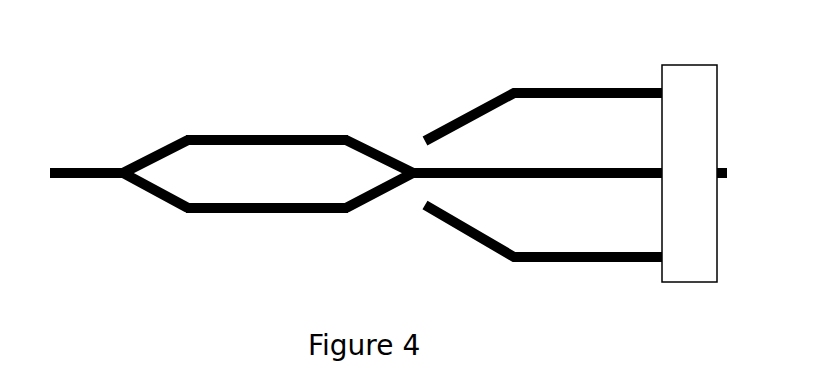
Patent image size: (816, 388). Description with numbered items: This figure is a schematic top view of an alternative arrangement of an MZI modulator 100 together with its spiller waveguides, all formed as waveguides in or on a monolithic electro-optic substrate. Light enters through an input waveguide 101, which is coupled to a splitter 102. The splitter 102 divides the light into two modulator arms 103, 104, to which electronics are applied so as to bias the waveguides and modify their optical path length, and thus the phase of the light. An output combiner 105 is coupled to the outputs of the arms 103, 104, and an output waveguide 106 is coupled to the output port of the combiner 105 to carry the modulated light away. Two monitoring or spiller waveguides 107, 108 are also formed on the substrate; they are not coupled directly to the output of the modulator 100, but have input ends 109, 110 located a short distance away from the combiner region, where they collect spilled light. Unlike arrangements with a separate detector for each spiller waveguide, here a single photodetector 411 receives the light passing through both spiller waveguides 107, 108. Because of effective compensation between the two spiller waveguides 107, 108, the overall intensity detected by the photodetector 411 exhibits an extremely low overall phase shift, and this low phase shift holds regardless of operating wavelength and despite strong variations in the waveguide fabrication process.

The MZI modulator 100 is at (219, 97).
The input waveguide 101 is at (88, 178).
The splitter 102 is at (123, 180).
The modulator arm 103 is at (308, 135).
The modulator arm 104 is at (317, 213).
The output combiner 105 is at (415, 168).
The output waveguide 106 is at (618, 170).
The spiller waveguide 107 is at (615, 88).
The spiller waveguide 108 is at (618, 262).
The input end 109 is at (418, 133).
The input end 110 is at (426, 203).
The photodetector 411 is at (688, 65).